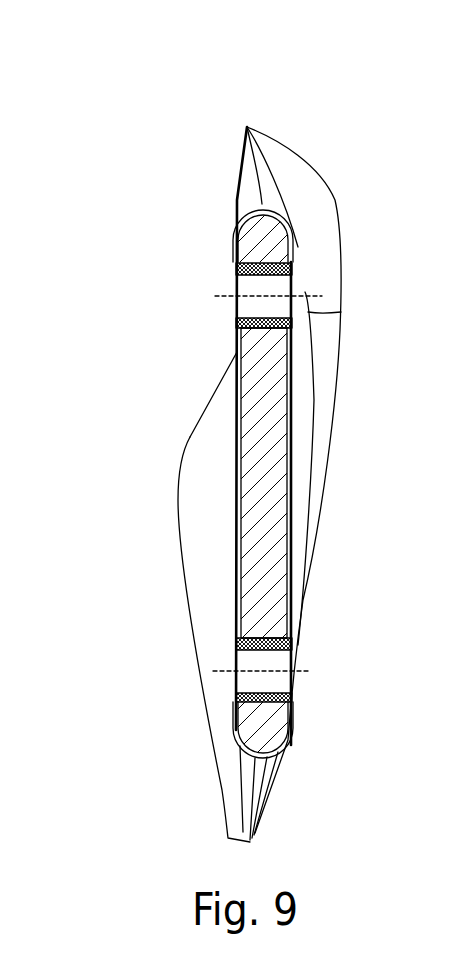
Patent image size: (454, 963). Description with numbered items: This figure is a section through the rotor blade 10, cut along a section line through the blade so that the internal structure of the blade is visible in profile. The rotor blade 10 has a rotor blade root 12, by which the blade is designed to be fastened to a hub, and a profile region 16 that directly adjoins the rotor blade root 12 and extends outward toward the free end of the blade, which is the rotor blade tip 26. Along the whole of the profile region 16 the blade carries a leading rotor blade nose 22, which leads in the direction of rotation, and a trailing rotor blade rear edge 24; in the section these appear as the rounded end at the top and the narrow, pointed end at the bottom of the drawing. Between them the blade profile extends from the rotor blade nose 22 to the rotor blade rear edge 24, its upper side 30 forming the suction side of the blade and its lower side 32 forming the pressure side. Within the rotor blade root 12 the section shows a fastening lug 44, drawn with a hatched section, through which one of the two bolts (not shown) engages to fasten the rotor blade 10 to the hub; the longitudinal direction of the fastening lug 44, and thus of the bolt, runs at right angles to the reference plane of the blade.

The rotor blade 10 is at (328, 148).
The rotor blade root 12 is at (262, 405).
The profile region 16 is at (313, 204).
The rotor blade nose 22 is at (288, 142).
The rotor blade rear edge 24 is at (252, 843).
The rotor blade tip 26 is at (203, 410).
The upper side 30 is at (328, 348).
The lower side 32 is at (205, 493).
The fastening lug 44 is at (247, 312).